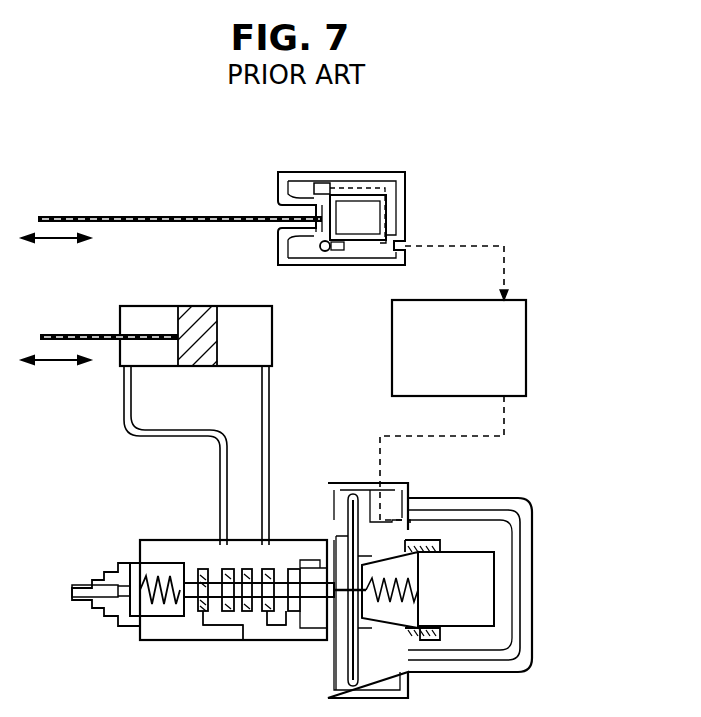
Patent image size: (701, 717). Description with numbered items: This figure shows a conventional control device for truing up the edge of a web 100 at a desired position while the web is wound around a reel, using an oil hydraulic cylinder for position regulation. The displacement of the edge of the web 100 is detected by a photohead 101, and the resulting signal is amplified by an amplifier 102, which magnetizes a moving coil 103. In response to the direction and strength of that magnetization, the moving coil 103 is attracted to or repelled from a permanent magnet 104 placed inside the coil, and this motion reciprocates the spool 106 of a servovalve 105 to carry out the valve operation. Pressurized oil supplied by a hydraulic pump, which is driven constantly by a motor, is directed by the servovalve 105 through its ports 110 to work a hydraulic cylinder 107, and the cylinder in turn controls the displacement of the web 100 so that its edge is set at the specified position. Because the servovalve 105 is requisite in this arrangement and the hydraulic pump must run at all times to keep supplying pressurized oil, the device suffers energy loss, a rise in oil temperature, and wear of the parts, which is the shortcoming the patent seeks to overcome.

The web 100 is at (174, 216).
The photohead 101 is at (370, 180).
The amplifier 102 is at (527, 333).
The moving coil 103 is at (432, 540).
The permanent magnet 104 is at (487, 598).
The servovalve 105 is at (170, 540).
The spool 106 is at (240, 592).
The hydraulic cylinder 107 is at (203, 306).
The pressure ports 110 is at (243, 638).